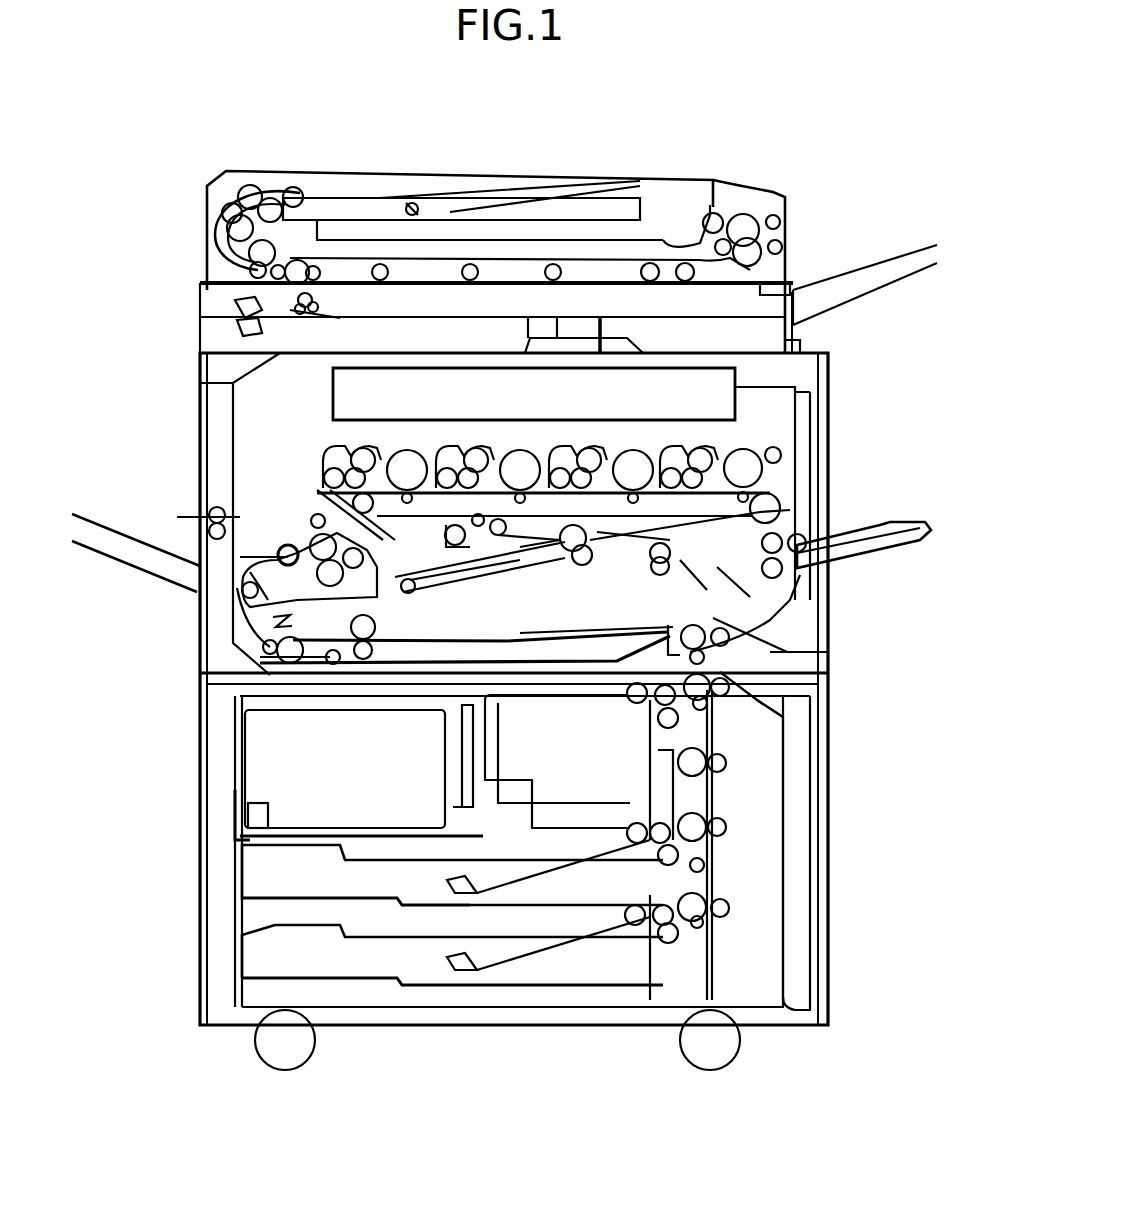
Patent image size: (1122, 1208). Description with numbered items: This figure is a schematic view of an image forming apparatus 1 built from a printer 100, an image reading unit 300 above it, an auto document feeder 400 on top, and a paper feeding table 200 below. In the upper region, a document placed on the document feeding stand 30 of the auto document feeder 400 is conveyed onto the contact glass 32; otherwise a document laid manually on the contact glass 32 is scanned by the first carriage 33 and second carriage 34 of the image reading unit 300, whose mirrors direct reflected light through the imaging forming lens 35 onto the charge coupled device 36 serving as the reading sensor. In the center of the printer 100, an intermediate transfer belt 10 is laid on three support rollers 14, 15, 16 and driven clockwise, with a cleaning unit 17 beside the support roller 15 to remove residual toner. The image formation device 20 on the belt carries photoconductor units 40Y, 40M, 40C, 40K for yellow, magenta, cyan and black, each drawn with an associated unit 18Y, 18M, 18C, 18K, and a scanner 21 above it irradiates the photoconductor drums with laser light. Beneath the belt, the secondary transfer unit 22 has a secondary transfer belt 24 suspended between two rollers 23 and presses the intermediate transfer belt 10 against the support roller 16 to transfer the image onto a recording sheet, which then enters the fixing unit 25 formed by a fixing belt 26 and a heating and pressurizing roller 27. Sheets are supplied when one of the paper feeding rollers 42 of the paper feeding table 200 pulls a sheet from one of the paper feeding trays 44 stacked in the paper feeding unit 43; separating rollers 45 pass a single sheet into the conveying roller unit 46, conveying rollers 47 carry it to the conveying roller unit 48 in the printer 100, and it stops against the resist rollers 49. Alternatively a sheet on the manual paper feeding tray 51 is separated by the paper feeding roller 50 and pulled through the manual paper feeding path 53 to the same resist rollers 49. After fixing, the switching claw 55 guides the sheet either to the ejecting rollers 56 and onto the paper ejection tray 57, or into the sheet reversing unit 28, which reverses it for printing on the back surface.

The image forming apparatus 1 is at (803, 124).
The auto document feeder 400 is at (205, 205).
The image reading unit 300 is at (200, 310).
The printer 100 is at (200, 435).
The paper feeding table 200 is at (200, 782).
The document feeding stand 30 is at (452, 195).
The contact glass 32 is at (598, 275).
The first carriage 33 is at (318, 315).
The second carriage 34 is at (245, 325).
The imaging forming lens 35 is at (528, 322).
The charge coupled device 36 is at (612, 322).
The scanner 21 is at (800, 356).
The image formation device 20 is at (332, 450).
The photoconductor unit 40Y is at (400, 455).
The developing device yellow 18Y is at (412, 432).
The photoconductor unit 40M is at (512, 432).
The developing device magenta 18M is at (528, 432).
The photoconductor unit 40C is at (625, 432).
The developing device cyan 18C is at (640, 432).
The photoconductor unit 40K is at (765, 462).
The developing device black 18K is at (762, 423).
The support roller 14 is at (783, 490).
The paper feeding roller 50 is at (805, 527).
The fixing belt 26 is at (330, 525).
The ejecting rollers 56 is at (275, 565).
The paper ejection tray 57 is at (120, 553).
The switching claw 55 is at (260, 583).
The fixing unit 25 is at (250, 597).
The heating and pressurizing roller 27 is at (465, 636).
The support roller 15 is at (393, 540).
The intermediate transfer belt 10 is at (448, 530).
The cleaning unit 17 is at (505, 565).
The secondary transfer belt 24 is at (500, 578).
The rollers 23 is at (430, 592).
The support roller 16 is at (575, 565).
The secondary transfer unit 22 is at (600, 563).
The resist rollers 49 is at (690, 620).
The manual paper feeding path 53 is at (726, 575).
The manual paper feeding tray 51 is at (865, 552).
The conveying roller unit 48 is at (823, 652).
The sheet reversing unit 28 is at (505, 710).
The paper feeding trays 44 is at (298, 843).
The paper feeding unit 43 is at (297, 902).
The paper feeding rollers 42 is at (637, 713).
The separating rollers 45 is at (652, 738).
The conveying rollers 47 is at (725, 705).
The conveying roller unit 46 is at (740, 798).